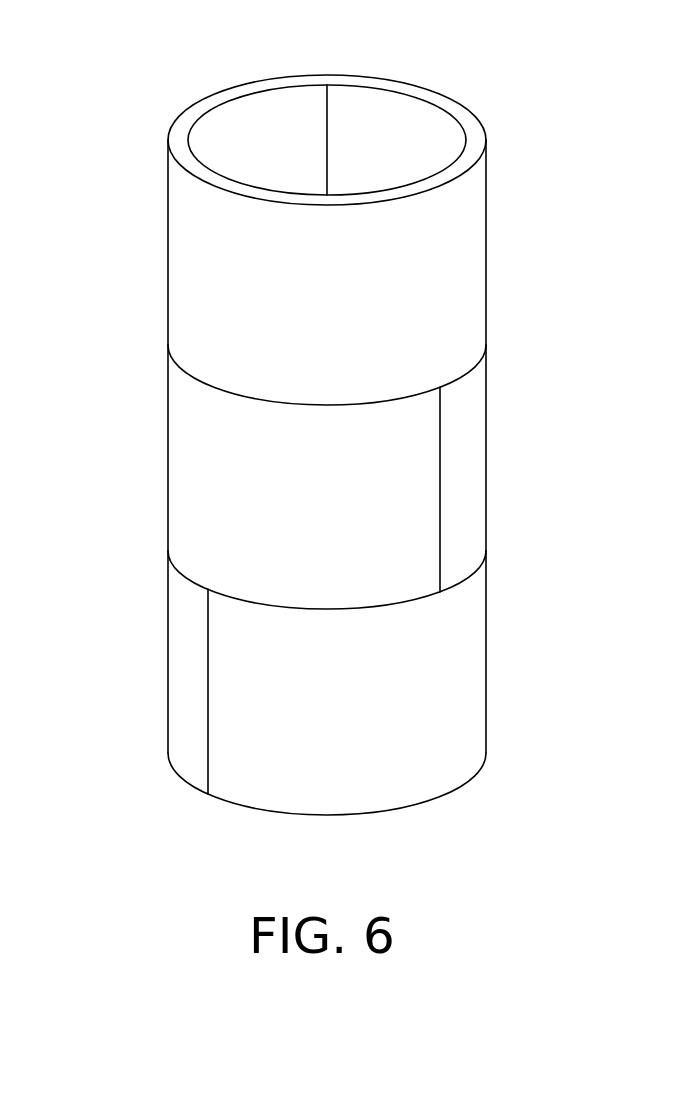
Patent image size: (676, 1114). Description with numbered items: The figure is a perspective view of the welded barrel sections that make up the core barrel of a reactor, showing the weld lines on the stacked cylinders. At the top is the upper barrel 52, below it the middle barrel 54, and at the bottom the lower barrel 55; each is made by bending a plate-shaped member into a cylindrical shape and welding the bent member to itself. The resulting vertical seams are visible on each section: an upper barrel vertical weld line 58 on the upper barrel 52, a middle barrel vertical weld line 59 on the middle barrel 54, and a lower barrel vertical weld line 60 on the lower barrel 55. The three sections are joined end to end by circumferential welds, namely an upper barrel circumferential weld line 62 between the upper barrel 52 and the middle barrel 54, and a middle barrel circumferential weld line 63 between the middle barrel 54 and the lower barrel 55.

The upper barrel 52 is at (203, 272).
The middle barrel 54 is at (203, 472).
The lower barrel 55 is at (190, 661).
The upper barrel vertical weld line 58 is at (326, 108).
The middle barrel vertical weld line 59 is at (440, 468).
The lower barrel vertical weld line 60 is at (208, 773).
The upper barrel circumferential weld line 62 is at (250, 397).
The middle barrel circumferential weld line 63 is at (285, 607).